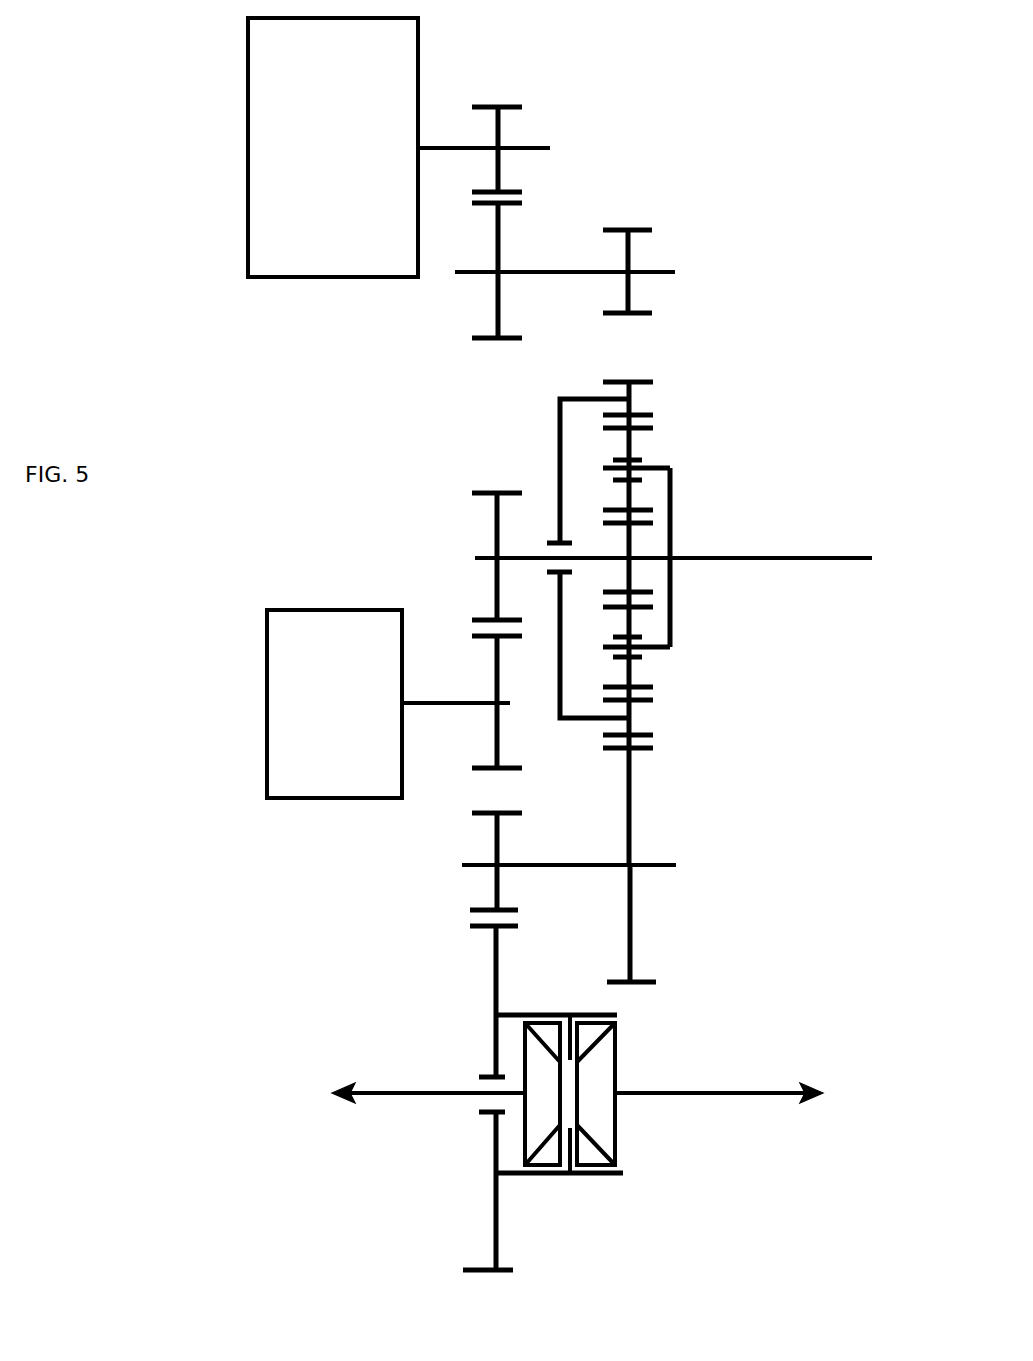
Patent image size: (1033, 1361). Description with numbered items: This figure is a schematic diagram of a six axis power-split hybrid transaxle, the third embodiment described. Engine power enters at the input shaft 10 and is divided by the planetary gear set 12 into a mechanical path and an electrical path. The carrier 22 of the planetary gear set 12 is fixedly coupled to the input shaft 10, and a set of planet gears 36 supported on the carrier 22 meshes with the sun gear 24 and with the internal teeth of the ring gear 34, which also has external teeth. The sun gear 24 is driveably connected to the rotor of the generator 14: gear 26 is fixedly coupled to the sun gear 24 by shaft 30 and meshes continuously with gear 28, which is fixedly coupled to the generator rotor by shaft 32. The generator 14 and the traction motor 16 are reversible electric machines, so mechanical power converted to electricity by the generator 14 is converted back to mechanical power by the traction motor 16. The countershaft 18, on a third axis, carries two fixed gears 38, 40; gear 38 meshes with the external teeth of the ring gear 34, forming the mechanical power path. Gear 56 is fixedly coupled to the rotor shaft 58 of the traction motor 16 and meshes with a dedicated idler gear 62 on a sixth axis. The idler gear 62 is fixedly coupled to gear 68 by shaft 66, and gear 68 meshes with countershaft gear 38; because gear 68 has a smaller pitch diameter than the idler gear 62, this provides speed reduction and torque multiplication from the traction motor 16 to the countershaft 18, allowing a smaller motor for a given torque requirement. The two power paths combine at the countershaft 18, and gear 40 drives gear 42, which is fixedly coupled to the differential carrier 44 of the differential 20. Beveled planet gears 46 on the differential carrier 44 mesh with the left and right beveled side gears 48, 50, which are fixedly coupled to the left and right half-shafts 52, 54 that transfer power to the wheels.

The input shaft 10 is at (803, 560).
The planetary gear set 12 is at (638, 623).
The generator 14 is at (330, 798).
The traction motor 16 is at (418, 57).
The countershaft 18 is at (653, 862).
The differential 20 is at (577, 1154).
The carrier 22 is at (673, 517).
The sun gear 24 is at (627, 570).
The gear 26 is at (495, 517).
The gear 28 is at (500, 755).
The shaft 30 is at (475, 560).
The shaft 32 is at (467, 705).
The ring gear 34 is at (560, 468).
The planet gears 36 is at (633, 442).
The gear 38 is at (632, 903).
The gear 40 is at (496, 873).
The gear 42 is at (496, 987).
The differential carrier 44 is at (512, 1177).
The beveled planet gears 46 is at (547, 1177).
The left side gear 48 is at (520, 1117).
The right side gear 50 is at (620, 1040).
The left half-shaft 52 is at (387, 1093).
The right half-shaft 54 is at (710, 1095).
The gear 56 is at (500, 170).
The rotor shaft 58 is at (528, 145).
The idler gear 62 is at (497, 290).
The shaft 66 is at (537, 275).
The gear 68 is at (633, 297).